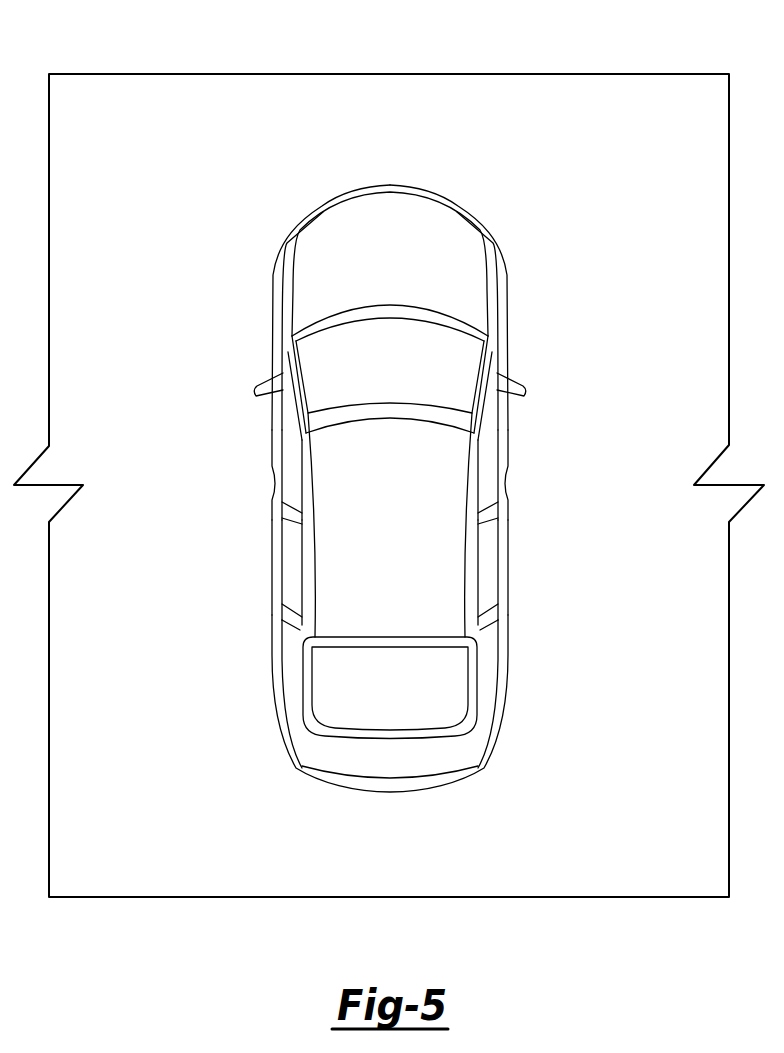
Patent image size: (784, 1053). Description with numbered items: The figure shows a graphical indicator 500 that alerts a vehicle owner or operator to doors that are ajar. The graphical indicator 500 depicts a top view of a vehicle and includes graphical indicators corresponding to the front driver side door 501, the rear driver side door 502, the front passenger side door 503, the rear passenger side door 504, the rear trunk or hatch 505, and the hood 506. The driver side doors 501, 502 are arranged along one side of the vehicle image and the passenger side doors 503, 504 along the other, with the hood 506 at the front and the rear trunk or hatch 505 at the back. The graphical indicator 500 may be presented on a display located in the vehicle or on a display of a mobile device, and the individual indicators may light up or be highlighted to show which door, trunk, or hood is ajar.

The graphical indicator 500 is at (178, 74).
The front driver side door 501 is at (272, 458).
The rear driver side door 502 is at (272, 572).
The front passenger side door 503 is at (508, 458).
The rear passenger side door 504 is at (508, 572).
The rear trunk or hatch 505 is at (352, 770).
The hood 506 is at (408, 238).